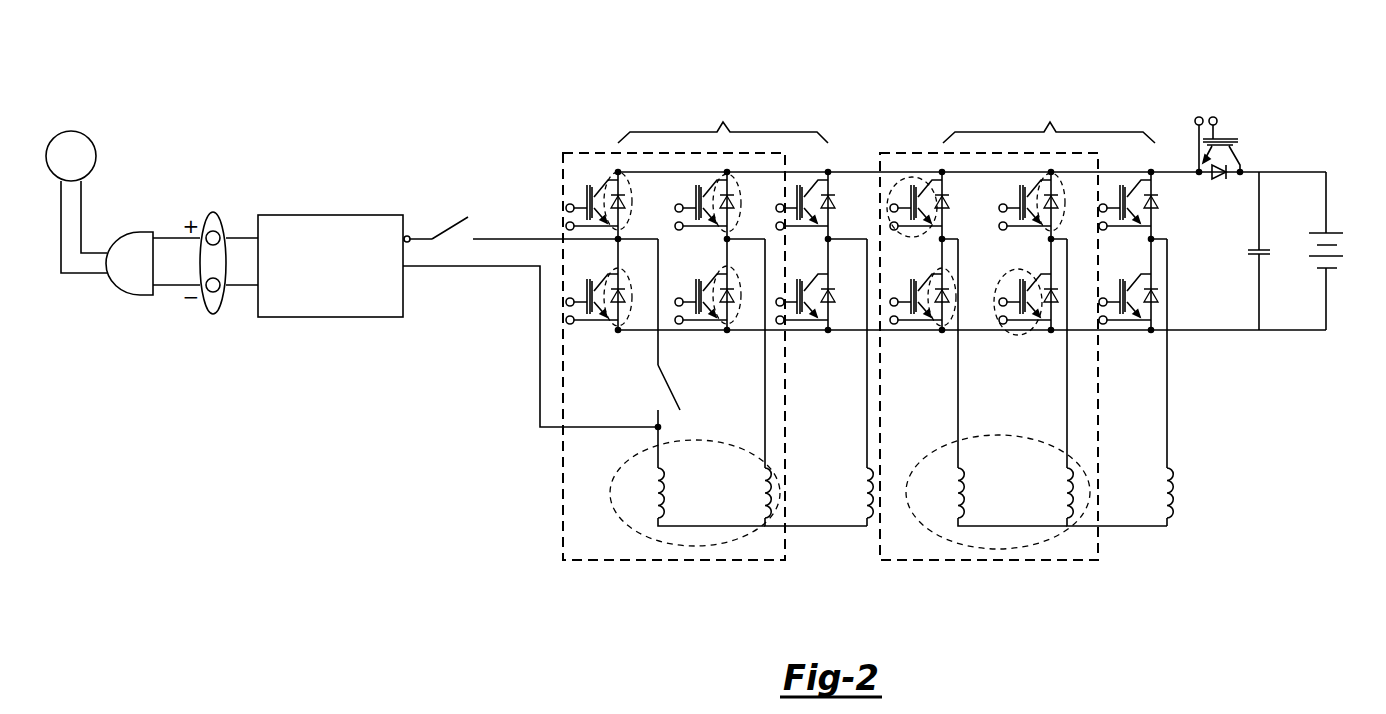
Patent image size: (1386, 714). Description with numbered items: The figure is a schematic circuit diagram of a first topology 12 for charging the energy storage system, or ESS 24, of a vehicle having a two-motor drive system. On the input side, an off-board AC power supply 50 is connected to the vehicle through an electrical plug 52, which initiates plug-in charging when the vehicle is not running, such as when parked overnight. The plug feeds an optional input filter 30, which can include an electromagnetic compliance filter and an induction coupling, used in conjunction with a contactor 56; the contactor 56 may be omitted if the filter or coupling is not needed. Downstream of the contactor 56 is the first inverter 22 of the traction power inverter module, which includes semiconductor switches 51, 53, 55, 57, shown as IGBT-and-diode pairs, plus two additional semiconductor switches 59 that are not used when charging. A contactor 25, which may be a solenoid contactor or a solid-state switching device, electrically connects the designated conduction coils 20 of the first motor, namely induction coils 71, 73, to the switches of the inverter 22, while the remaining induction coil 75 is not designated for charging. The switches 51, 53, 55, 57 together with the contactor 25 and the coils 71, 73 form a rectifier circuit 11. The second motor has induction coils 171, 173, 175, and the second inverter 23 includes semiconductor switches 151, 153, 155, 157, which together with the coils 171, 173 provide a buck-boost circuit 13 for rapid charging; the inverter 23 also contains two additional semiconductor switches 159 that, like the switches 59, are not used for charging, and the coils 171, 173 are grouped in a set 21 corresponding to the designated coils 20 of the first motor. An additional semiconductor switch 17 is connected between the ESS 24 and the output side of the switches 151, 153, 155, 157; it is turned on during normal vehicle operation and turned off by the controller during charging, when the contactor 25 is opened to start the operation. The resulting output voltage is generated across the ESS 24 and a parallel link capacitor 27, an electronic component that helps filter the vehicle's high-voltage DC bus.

The rectifier circuit 11 is at (598, 562).
The first topology 12 is at (416, 96).
The buck-boost circuit 13 is at (910, 562).
The additional semiconductor switch 17 is at (1237, 96).
The designated conduction coils 20 is at (700, 548).
The second winding set 21 is at (995, 550).
The inverter 22 is at (723, 119).
The inverter 23 is at (1049, 118).
The ESS 24 is at (1360, 262).
The contactor 25 is at (677, 394).
The parallel link capacitor 27 is at (1263, 257).
The input filter 30 is at (320, 277).
The off-board AC power supply 50 is at (62, 169).
The electrical plug 52 is at (124, 275).
The contactor 56 is at (452, 228).
The semiconductor switch 51 is at (638, 214).
The semiconductor switch 53 is at (638, 309).
The semiconductor switch 55 is at (748, 214).
The semiconductor switch 57 is at (738, 274).
The additional semiconductor switches 59 is at (848, 214).
The induction coil 71 is at (628, 502).
The induction coil 73 is at (736, 502).
The induction coil 75 is at (818, 502).
The semiconductor switch 151 is at (964, 214).
The semiconductor switch 153 is at (964, 305).
The semiconductor switch 155 is at (1068, 214).
The semiconductor switch 157 is at (1068, 305).
The additional semiconductor switches 159 is at (1170, 214).
The induction coil 171 is at (924, 502).
The induction coil 173 is at (1031, 502).
The induction coil 175 is at (1113, 502).